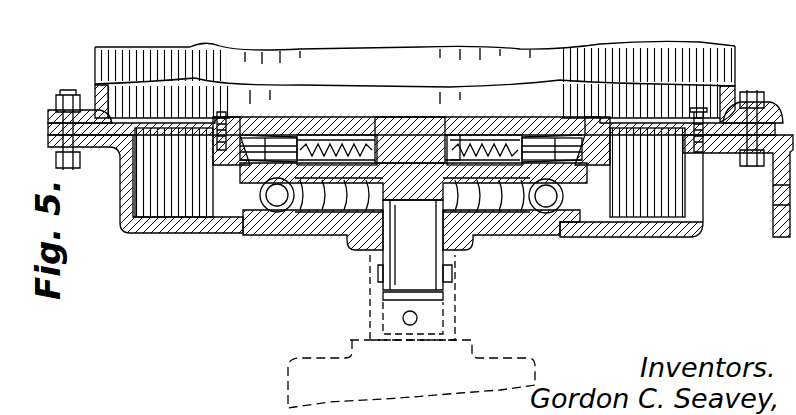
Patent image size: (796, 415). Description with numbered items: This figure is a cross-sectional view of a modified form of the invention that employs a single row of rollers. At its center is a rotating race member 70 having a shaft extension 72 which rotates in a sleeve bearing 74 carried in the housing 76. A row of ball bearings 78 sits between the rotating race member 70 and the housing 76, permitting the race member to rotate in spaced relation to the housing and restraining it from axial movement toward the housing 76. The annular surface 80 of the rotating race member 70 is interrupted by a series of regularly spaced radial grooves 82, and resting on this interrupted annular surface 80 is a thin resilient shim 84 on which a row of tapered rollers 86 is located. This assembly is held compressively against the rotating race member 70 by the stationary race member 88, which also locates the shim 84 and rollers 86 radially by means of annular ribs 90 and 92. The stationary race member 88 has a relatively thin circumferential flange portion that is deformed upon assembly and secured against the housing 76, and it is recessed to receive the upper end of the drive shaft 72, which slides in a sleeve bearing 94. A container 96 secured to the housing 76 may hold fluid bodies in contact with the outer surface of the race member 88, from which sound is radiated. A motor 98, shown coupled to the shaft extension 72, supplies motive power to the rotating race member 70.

The rotating race member 70 is at (583, 173).
The shaft extension 72 is at (435, 265).
The sleeve bearing 74 is at (372, 256).
The housing 76 is at (252, 226).
The ball bearings 78 is at (278, 198).
The annular surface 80 is at (258, 165).
The radial grooves 82 is at (285, 138).
The resilient shim 84 is at (265, 138).
The tapered rollers 86 is at (250, 130).
The stationary race member 88 is at (355, 140).
The annular rib 90 is at (380, 142).
The annular rib 92 is at (305, 140).
The sleeve bearing 94 is at (455, 130).
The container 96 is at (92, 108).
The motor 98 is at (288, 385).